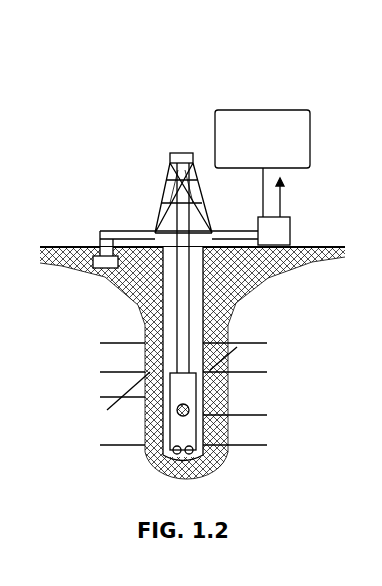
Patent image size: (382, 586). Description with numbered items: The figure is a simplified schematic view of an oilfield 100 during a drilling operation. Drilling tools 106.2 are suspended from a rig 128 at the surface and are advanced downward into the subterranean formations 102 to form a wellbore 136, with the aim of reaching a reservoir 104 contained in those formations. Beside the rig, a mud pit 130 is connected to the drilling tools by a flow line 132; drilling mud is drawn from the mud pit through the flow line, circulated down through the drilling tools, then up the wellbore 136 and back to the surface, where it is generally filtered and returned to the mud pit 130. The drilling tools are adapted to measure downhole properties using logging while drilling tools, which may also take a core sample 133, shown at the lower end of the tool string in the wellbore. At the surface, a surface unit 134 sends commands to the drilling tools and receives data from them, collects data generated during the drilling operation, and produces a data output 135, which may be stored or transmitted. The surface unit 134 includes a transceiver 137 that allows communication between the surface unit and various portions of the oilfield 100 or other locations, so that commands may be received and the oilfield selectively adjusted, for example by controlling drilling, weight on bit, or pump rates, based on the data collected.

The oilfield 100 is at (102, 158).
The subterranean formations 102 is at (280, 331).
The reservoir 104 is at (250, 401).
The drilling tools 106.2 is at (140, 385).
The rig 128 is at (163, 197).
The mud pit 130 is at (98, 275).
The flow line 132 is at (100, 232).
The core sample 133 is at (170, 458).
The surface unit 134 is at (290, 235).
The data output 135 is at (283, 110).
The wellbore 136 is at (203, 302).
The transceiver 137 is at (280, 197).